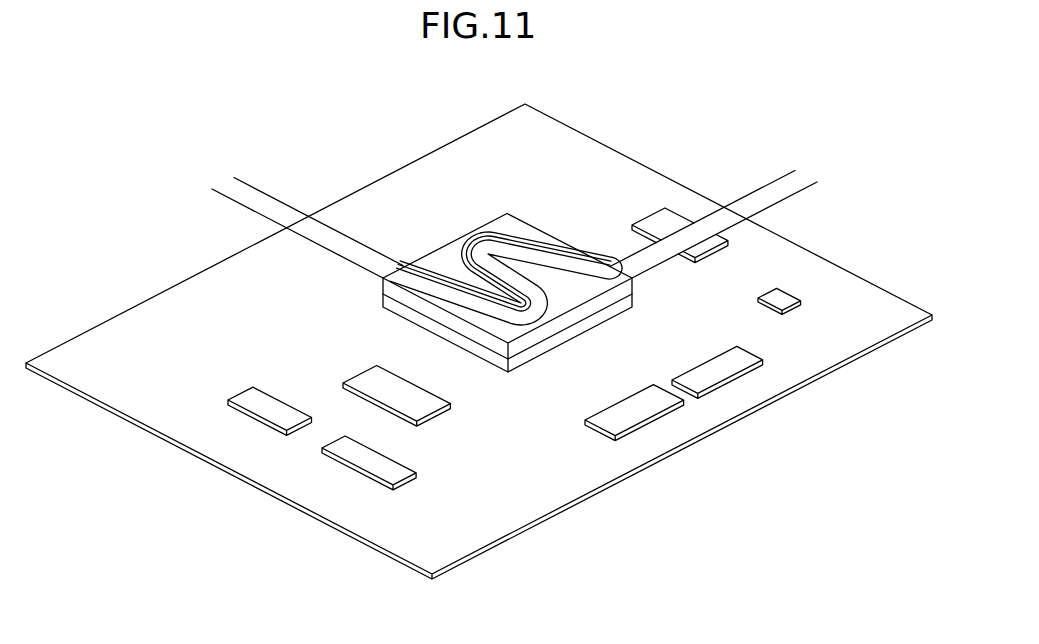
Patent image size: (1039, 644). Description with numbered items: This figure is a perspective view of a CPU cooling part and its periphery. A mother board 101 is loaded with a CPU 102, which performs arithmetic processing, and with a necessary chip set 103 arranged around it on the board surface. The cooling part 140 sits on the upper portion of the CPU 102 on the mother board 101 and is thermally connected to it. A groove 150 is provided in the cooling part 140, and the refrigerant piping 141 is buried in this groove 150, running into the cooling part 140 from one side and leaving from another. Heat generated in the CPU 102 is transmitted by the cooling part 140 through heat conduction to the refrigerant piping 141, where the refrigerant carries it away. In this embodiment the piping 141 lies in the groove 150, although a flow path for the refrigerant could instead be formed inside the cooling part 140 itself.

The mother board 101 is at (123, 327).
The CPU 102 is at (550, 342).
The chip set 103 is at (672, 218).
The cooling part 140 is at (515, 222).
The refrigerant piping 141 is at (280, 198).
The groove 150 is at (435, 255).